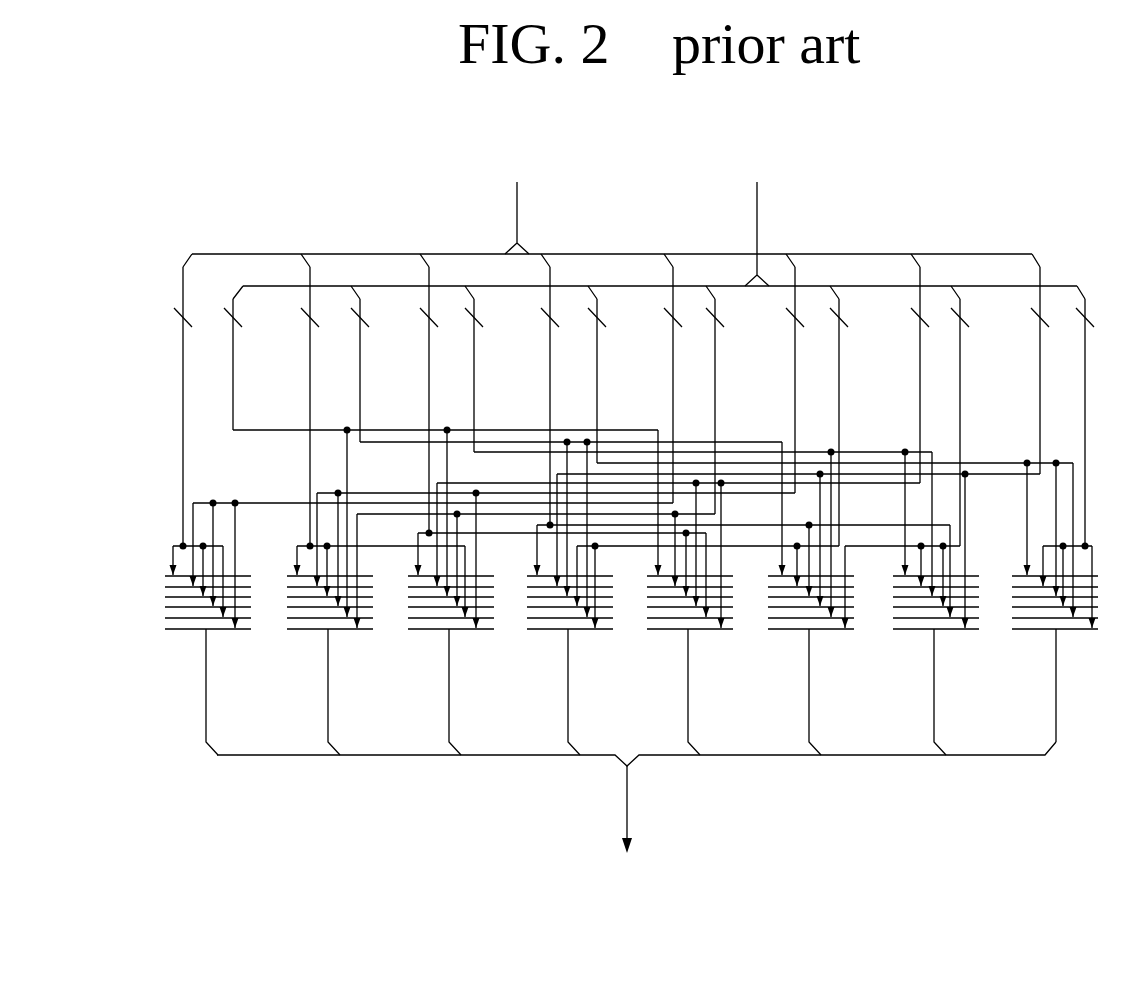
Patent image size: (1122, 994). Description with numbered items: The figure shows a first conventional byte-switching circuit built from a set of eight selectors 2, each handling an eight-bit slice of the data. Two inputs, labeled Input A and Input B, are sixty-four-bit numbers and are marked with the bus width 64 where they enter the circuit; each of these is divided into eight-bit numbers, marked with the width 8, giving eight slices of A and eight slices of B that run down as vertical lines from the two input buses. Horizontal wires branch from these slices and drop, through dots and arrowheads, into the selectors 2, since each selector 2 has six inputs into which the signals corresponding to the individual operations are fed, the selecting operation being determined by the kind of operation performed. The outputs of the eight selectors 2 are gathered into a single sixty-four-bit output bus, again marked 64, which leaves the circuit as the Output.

The selector 2 is at (142, 581).
The 64-bit bus 64 is at (636, 806).
The 8-bit line 8 is at (638, 406).